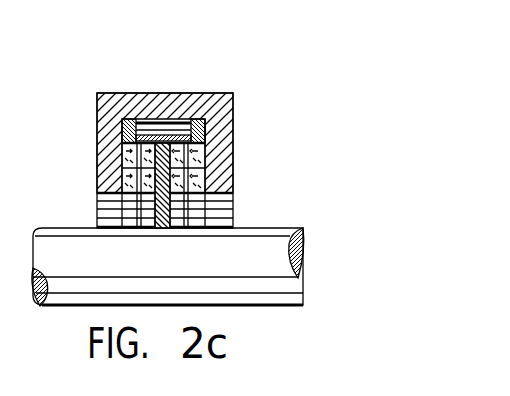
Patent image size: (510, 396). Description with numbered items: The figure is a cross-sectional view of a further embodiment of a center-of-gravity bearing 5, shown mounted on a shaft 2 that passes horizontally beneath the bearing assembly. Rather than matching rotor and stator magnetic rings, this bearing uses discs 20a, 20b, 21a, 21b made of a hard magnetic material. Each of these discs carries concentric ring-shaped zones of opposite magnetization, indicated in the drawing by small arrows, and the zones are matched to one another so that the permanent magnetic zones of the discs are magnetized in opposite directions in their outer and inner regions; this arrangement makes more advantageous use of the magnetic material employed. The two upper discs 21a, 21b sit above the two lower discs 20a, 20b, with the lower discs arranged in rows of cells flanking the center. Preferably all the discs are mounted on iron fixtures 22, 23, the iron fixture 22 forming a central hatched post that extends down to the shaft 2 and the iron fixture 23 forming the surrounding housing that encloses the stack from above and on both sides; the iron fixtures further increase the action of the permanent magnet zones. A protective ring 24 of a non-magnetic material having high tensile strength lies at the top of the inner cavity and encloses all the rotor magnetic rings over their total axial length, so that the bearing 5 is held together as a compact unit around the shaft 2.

The tube 2 is at (233, 243).
The center-of-gravity bearing 5 is at (239, 103).
The disc 20a is at (124, 190).
The disc 20b is at (210, 183).
The disc 21a is at (124, 161).
The disc 21b is at (208, 150).
The iron fixture 22 is at (161, 229).
The iron fixture 23 is at (106, 118).
The protective ring 24 is at (170, 100).